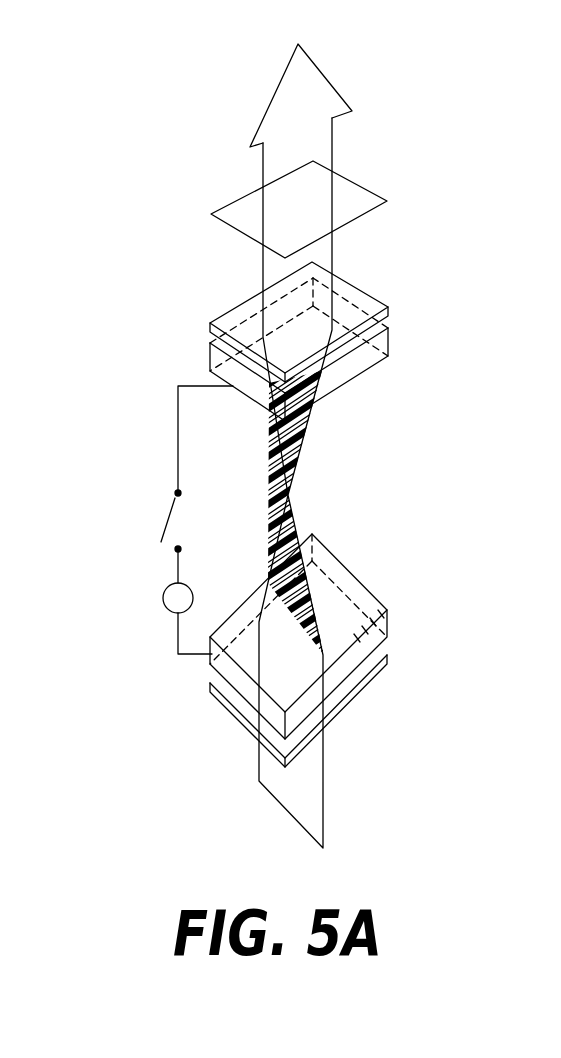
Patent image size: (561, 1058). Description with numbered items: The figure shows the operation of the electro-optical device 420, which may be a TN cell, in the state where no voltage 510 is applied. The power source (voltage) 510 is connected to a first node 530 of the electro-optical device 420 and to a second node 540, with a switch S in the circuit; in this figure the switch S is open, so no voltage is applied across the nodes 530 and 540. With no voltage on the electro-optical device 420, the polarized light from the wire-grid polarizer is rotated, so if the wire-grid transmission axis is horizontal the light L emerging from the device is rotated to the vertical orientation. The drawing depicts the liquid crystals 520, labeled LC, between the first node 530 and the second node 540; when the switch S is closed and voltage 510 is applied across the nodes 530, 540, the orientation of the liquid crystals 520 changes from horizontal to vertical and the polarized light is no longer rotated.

The electro-optical device 420 is at (160, 164).
The voltage 510 is at (163, 595).
The liquid crystals 520 is at (384, 445).
The first node 530 is at (385, 308).
The second node 540 is at (387, 625).
The liquid crystal LC is at (303, 442).
The light beam L is at (318, 800).
The switch S is at (183, 521).